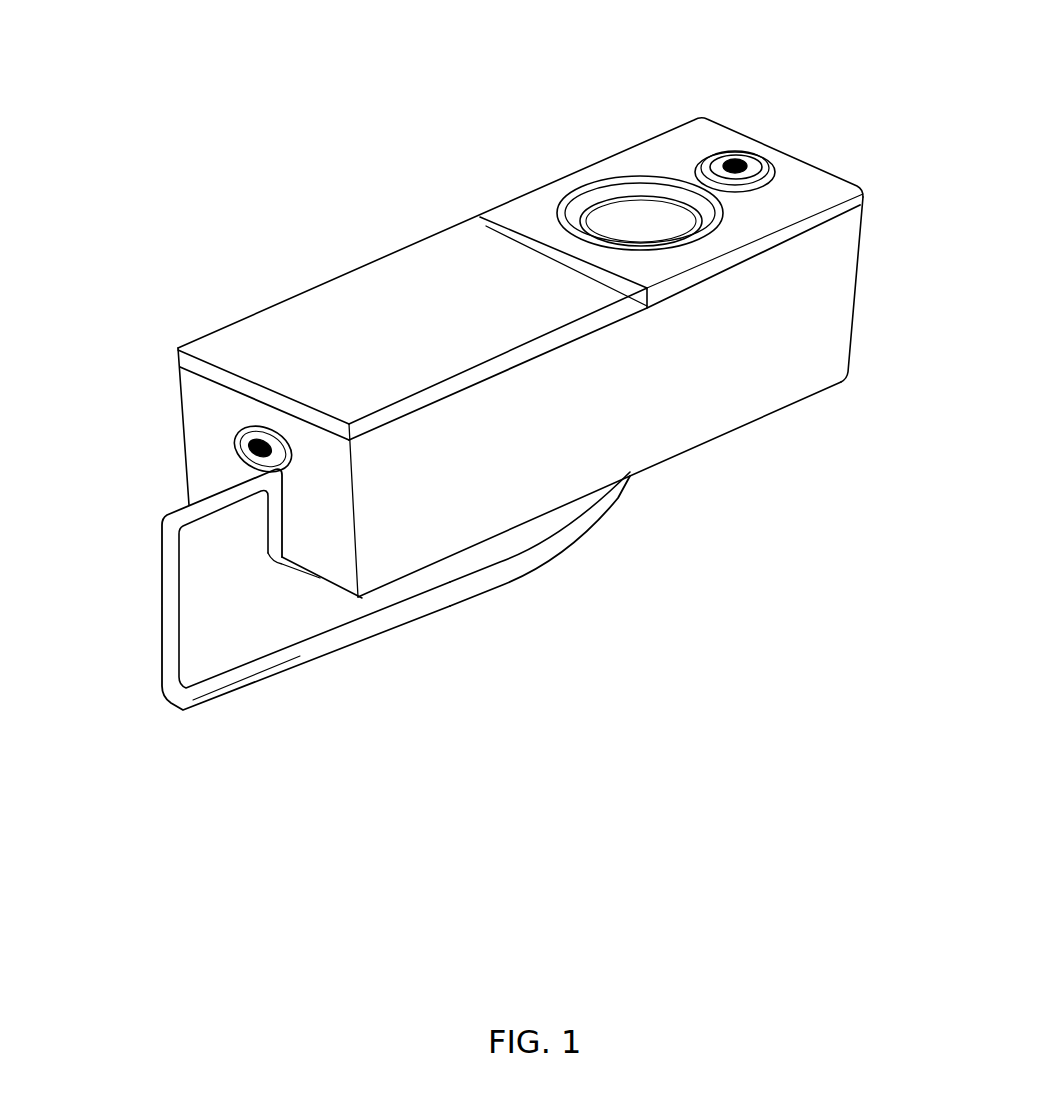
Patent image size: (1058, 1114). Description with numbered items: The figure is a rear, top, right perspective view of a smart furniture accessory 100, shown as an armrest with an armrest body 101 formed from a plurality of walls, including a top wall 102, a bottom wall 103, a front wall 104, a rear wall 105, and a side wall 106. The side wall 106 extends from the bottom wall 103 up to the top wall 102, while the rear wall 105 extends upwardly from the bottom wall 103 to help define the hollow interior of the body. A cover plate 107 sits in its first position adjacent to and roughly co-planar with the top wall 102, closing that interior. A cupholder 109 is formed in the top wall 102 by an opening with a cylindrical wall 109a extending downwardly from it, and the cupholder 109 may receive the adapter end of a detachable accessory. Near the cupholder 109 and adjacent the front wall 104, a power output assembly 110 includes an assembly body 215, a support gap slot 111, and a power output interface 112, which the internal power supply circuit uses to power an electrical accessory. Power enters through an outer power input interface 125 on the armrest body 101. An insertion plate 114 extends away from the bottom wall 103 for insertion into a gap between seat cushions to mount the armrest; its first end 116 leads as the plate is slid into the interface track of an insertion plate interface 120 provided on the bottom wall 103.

The furniture accessory 100 is at (292, 127).
The armrest body 101 is at (703, 400).
The top wall 102 is at (737, 232).
The bottom wall 103 is at (680, 457).
The front wall 104 is at (860, 297).
The rear wall 105 is at (327, 467).
The side wall 106 is at (583, 398).
The cover plate 107 is at (300, 315).
The cupholder 109 is at (587, 200).
The cylindrical wall 109a is at (643, 207).
The power output assembly 110 is at (766, 160).
The support gap slot 111 is at (745, 163).
The power output interface 112 is at (728, 163).
The insertion plate 114 is at (160, 558).
The first end 116 is at (623, 497).
The insertion plate interface 120 is at (295, 558).
The outer power input interface 125 is at (240, 447).
The assembly body 215 is at (765, 182).